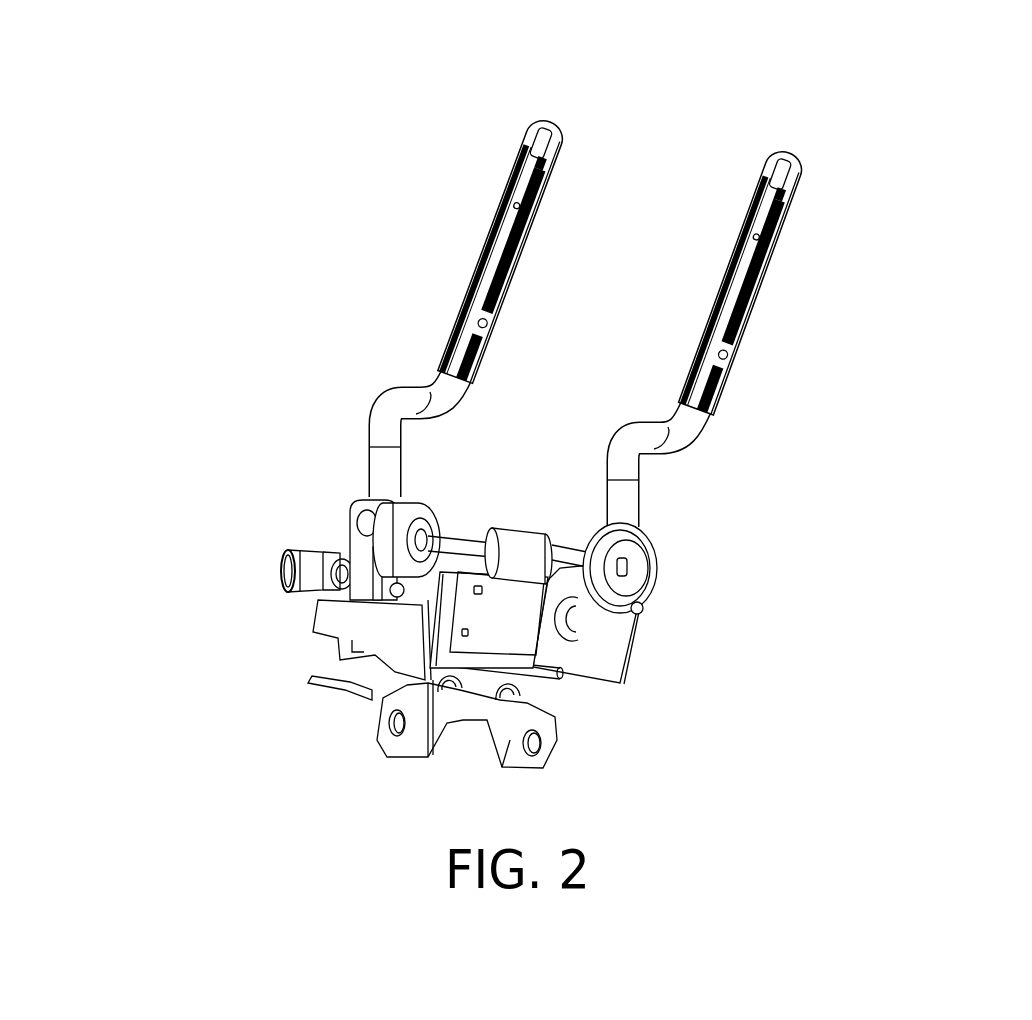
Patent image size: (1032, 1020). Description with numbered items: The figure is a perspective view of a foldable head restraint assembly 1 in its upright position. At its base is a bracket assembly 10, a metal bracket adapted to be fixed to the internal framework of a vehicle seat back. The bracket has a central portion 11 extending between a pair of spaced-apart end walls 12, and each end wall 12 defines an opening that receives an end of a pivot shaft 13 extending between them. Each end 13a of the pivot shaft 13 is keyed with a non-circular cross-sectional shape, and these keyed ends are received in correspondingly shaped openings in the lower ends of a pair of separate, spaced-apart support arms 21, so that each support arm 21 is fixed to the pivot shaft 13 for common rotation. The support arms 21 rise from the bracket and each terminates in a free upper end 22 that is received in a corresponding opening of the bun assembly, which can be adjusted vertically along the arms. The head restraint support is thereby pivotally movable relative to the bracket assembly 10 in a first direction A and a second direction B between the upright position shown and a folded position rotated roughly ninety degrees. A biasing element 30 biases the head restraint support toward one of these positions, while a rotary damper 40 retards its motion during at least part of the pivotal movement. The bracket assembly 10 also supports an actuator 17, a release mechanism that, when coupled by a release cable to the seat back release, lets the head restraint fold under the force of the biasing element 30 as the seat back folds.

The foldable head restraint assembly 1 is at (885, 437).
The bracket assembly 10 is at (640, 637).
The central portion 11 is at (412, 642).
The end wall 12 is at (313, 632).
The pivot shaft 13 is at (465, 538).
The pivot shaft end 13a is at (630, 570).
The actuator 17 is at (273, 550).
The support arm 21 is at (440, 368).
The free upper end 22 is at (521, 143).
The biasing element 30 is at (545, 540).
The rotary damper 40 is at (422, 498).
The first direction A is at (783, 92).
The second direction B is at (865, 107).